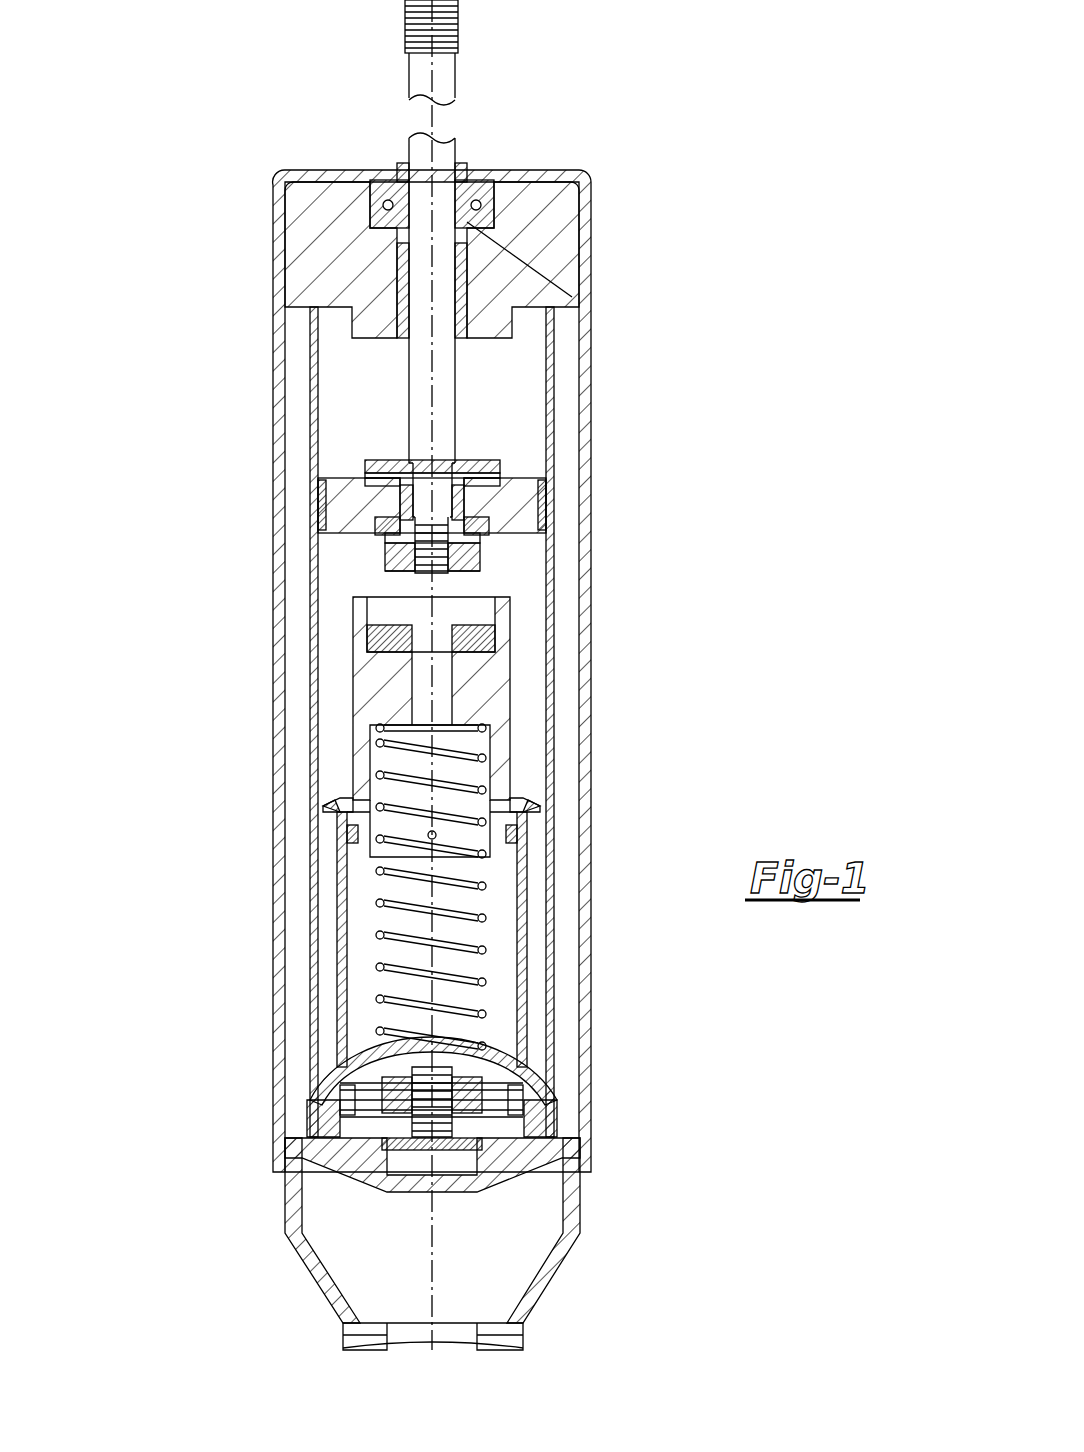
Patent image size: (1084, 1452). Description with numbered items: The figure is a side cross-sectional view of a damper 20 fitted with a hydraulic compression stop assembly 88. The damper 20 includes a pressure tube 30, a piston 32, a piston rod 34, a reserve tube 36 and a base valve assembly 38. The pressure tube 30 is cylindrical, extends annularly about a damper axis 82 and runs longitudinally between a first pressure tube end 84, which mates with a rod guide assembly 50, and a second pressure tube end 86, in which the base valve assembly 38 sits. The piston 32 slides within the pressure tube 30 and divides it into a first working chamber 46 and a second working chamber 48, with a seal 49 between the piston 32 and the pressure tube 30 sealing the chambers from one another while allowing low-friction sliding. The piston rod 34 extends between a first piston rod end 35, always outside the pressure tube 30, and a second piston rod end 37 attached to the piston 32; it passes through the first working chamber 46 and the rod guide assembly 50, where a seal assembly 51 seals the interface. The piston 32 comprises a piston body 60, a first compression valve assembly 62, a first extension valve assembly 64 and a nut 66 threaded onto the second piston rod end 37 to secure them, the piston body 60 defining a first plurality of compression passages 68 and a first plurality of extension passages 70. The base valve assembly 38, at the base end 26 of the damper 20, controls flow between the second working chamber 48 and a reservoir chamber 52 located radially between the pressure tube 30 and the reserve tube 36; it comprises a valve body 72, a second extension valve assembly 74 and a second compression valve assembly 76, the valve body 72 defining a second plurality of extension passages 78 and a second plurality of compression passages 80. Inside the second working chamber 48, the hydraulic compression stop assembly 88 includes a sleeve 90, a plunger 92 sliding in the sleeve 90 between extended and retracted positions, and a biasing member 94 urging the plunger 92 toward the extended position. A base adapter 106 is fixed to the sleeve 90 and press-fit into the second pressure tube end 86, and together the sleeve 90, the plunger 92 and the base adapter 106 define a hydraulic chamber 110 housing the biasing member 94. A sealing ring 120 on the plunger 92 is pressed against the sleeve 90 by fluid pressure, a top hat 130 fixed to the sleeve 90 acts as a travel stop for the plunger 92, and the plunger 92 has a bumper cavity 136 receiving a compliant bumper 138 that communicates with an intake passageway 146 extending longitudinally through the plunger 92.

The damper 20 is at (705, 222).
The base end 26 is at (236, 1180).
The pressure tube 30 is at (318, 930).
The piston 32 is at (495, 572).
The piston rod 34 is at (412, 148).
The first piston rod end 35 is at (455, 45).
The reserve tube 36 is at (283, 610).
The second piston rod end 37 is at (393, 556).
The base valve assembly 38 is at (490, 1072).
The first working chamber 46 is at (390, 407).
The second working chamber 48 is at (336, 668).
The seal 49 is at (545, 510).
The rod guide assembly 50 is at (303, 225).
The seal assembly 51 is at (480, 225).
The reservoir chamber 52 is at (558, 688).
The piston body 60 is at (385, 515).
The first compression valve assembly 62 is at (497, 463).
The first extension valve assembly 64 is at (382, 540).
The nut 66 is at (500, 545).
The first plurality of compression passages 68 is at (490, 492).
The first plurality of extension passages 70 is at (400, 480).
The valve body 72 is at (505, 1140).
The second extension valve assembly 74 is at (368, 1085).
The second compression valve assembly 76 is at (358, 1150).
The second plurality of extension passages 78 is at (370, 1133).
The second plurality of compression passages 80 is at (378, 1132).
The damper axis 82 is at (432, 122).
The first pressure tube end 84 is at (562, 345).
The second pressure tube end 86 is at (558, 1093).
The hydraulic compression stop assembly 88 is at (528, 770).
The sleeve 90 is at (522, 950).
The plunger 92 is at (495, 690).
The biasing member 94 is at (483, 948).
The base adapter 106 is at (332, 1073).
The hydraulic chamber 110 is at (359, 950).
The sealing ring 120 is at (515, 836).
The top hat 130 is at (527, 803).
The bumper cavity 136 is at (466, 600).
The bumper 138 is at (367, 640).
The intake passageway 146 is at (422, 690).